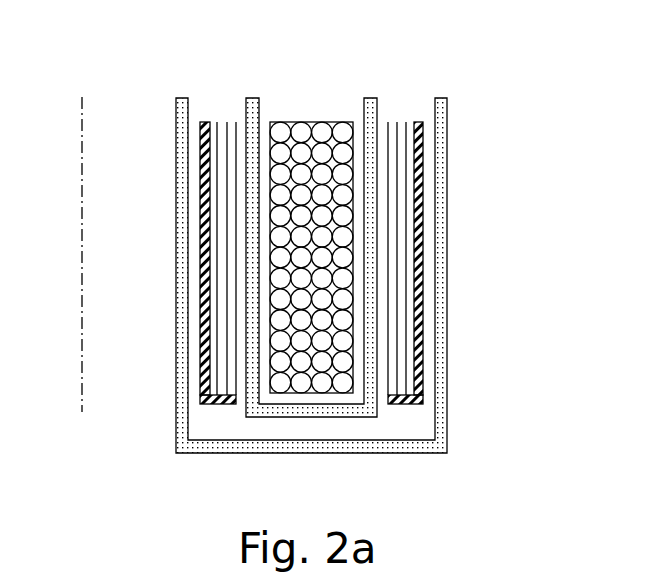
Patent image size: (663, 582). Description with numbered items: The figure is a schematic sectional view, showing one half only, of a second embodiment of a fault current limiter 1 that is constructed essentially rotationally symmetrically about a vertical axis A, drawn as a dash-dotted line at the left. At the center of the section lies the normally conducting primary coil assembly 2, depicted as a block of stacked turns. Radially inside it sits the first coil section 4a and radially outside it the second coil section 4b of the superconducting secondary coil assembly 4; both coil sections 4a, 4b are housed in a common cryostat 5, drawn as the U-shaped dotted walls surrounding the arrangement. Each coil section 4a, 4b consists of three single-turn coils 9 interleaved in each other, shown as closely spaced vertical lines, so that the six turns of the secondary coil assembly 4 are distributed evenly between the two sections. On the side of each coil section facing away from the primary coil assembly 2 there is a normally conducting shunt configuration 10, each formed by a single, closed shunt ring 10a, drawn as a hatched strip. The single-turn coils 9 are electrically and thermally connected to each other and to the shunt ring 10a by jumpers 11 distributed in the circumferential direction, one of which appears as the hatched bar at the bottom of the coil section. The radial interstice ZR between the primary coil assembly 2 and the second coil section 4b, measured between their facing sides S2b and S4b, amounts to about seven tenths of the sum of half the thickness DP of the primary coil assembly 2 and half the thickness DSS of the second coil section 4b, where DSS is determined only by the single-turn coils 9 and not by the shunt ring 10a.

The fault current limiter 1 is at (529, 136).
The primary coil assembly 2 is at (320, 362).
The secondary coil assembly 4 is at (222, 305).
The first coil section 4a is at (171, 242).
The second coil section 4b is at (476, 205).
The cryostat 5 is at (441, 378).
The single-turn coil 9 is at (218, 149).
The shunt configuration 10 is at (205, 258).
The shunt ring 10a is at (420, 236).
The jumper 11 is at (214, 405).
The vertical axis A is at (82, 160).
The side of the primary coil assembly S2b is at (345, 134).
The side of the second coil section S4b is at (394, 138).
The radial interstice ZR is at (387, 152).
The thickness of the primary coil assembly DP is at (270, 323).
The thickness of the second coil section DSS is at (388, 406).